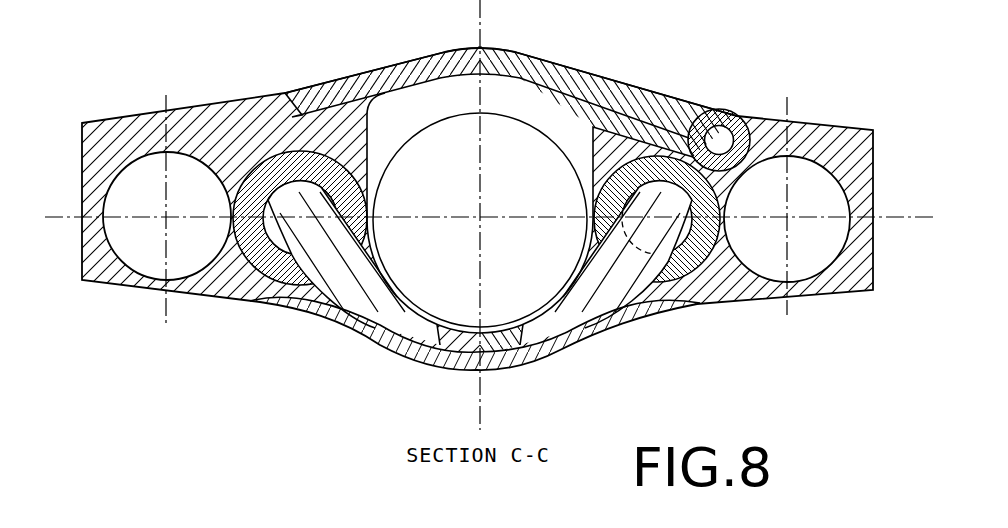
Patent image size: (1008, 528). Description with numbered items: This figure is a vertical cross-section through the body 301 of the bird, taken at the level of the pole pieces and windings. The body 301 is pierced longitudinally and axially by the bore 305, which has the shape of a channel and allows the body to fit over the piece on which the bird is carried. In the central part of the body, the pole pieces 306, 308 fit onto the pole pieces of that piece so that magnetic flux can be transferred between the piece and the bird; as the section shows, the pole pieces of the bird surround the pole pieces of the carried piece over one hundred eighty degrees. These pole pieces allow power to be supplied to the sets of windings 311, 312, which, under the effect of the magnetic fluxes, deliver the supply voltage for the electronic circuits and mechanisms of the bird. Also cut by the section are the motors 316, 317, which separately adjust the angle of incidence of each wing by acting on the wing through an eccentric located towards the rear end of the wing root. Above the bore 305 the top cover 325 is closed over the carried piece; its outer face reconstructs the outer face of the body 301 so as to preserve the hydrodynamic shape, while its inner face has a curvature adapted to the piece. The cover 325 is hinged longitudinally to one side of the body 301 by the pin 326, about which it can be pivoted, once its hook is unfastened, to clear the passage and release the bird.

The body 301 is at (838, 143).
The bore 305 is at (469, 229).
The pole piece 306 is at (390, 322).
The pole piece 308 is at (577, 322).
The set of windings 311 is at (698, 292).
The set of windings 312 is at (262, 290).
The motor 316 is at (804, 250).
The motor 317 is at (150, 250).
The top cover 325 is at (548, 60).
The pin 326 is at (722, 138).